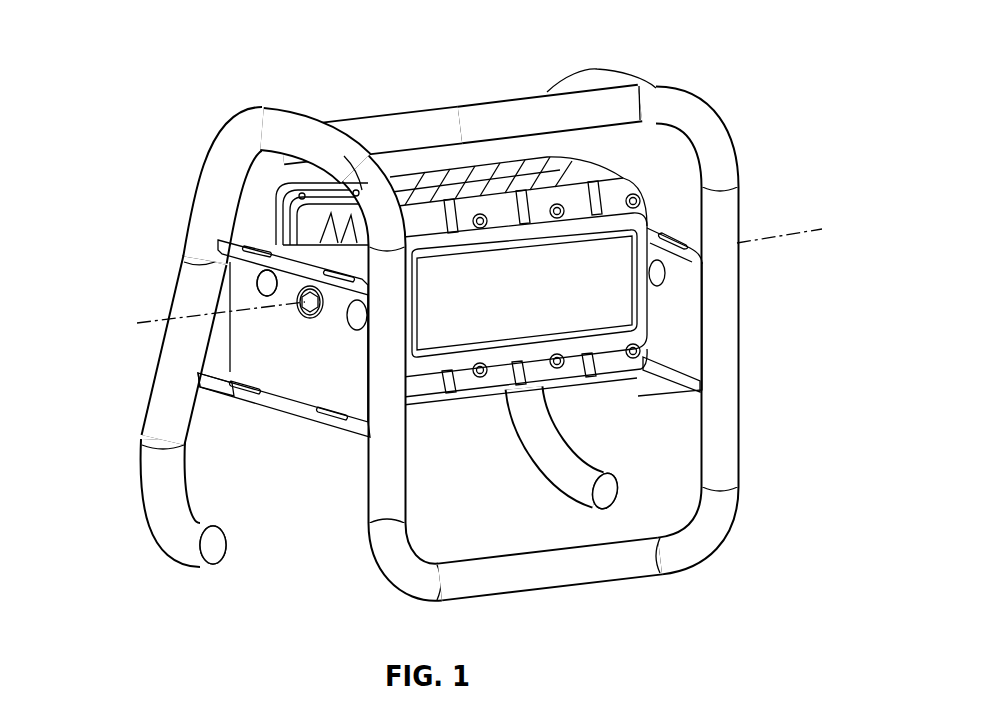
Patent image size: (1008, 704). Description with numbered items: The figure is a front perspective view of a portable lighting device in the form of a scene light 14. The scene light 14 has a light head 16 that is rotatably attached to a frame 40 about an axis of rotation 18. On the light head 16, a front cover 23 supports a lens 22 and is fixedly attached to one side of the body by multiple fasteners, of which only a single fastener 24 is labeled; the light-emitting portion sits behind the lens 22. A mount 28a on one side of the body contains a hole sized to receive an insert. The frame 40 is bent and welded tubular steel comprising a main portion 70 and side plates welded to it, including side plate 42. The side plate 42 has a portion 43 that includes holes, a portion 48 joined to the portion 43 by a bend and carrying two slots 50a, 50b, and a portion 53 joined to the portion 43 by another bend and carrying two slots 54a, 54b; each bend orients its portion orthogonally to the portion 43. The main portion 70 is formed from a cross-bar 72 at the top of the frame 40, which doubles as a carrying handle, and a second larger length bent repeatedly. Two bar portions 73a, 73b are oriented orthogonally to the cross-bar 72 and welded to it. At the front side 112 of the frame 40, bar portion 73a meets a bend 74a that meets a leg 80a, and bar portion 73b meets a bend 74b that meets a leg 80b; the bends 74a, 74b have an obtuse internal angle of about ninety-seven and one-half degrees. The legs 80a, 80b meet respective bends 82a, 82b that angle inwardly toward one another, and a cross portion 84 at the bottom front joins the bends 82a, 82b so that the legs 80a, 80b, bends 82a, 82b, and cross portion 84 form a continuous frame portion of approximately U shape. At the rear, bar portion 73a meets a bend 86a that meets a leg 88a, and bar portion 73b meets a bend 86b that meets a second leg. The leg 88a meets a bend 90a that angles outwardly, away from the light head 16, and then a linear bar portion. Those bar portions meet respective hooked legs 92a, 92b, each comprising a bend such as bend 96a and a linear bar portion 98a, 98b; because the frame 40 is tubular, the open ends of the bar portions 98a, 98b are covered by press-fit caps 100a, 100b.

The scene light 14 is at (435, 328).
The light head 16 is at (467, 217).
The axis of rotation 18 is at (168, 345).
The lens 22 is at (507, 277).
The front cover 23 is at (642, 165).
The fastener 24 is at (700, 267).
The mount 28a is at (250, 185).
The frame 40 is at (738, 329).
The side plate 42 is at (290, 355).
The portion 43 is at (243, 343).
The portion 48 is at (320, 228).
The slot 50a is at (275, 250).
The slot 50b is at (245, 248).
The portion 53 is at (303, 403).
The slot 54a is at (245, 376).
The slot 54b is at (337, 420).
The main portion 70 is at (727, 458).
The cross-bar 72 is at (370, 130).
The bar portion 73a is at (303, 140).
The bar portion 73b is at (653, 95).
The bend 74a is at (400, 153).
The bend 74b is at (700, 120).
The leg 80a is at (370, 500).
The leg 80b is at (723, 347).
The bend 82a is at (397, 567).
The bend 82b is at (710, 532).
The cross portion 84 is at (527, 583).
The bend 86a is at (233, 130).
The bend 86b is at (578, 78).
The leg 88a is at (187, 327).
The bend 90a is at (187, 378).
The hooked leg 92a is at (157, 527).
The hooked leg 92b is at (563, 453).
The bend 96a is at (147, 480).
The bar portion 98a is at (192, 547).
The bar portion 98b is at (567, 487).
The cap 100a is at (213, 543).
The cap 100b is at (607, 493).
The front side 112 is at (810, 159).